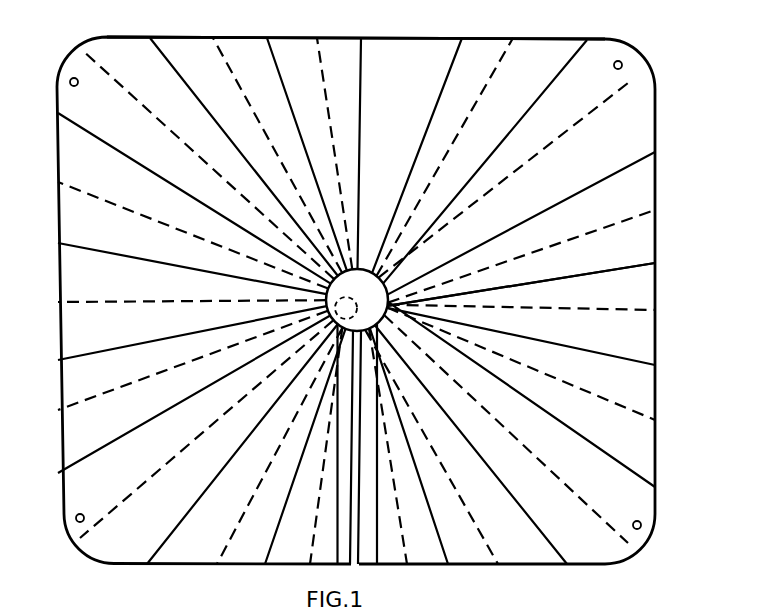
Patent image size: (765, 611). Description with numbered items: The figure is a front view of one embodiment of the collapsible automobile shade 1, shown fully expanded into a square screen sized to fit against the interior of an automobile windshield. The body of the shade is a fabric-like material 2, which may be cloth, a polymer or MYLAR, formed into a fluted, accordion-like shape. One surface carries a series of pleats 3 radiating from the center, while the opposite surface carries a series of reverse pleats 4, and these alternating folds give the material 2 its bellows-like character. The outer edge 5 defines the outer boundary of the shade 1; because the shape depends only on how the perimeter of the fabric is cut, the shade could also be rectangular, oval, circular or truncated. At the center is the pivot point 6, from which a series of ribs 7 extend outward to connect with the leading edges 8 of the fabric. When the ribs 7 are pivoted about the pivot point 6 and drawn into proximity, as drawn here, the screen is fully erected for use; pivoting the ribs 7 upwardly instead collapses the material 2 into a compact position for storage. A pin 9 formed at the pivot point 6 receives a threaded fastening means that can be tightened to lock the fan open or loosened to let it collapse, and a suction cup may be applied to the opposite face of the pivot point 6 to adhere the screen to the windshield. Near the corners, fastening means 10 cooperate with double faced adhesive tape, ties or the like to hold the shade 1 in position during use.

The collapsible automobile shade 1 is at (666, 184).
The fabric-like material 2 is at (626, 298).
The pleats 3 is at (60, 243).
The reverse pleats 4 is at (63, 392).
The outer edge 5 is at (420, 38).
The pivot point 6 is at (324, 301).
The ribs 7 is at (338, 496).
The leading edges 8 is at (337, 535).
The pin 9 is at (351, 312).
The fastening means 10 is at (70, 83).